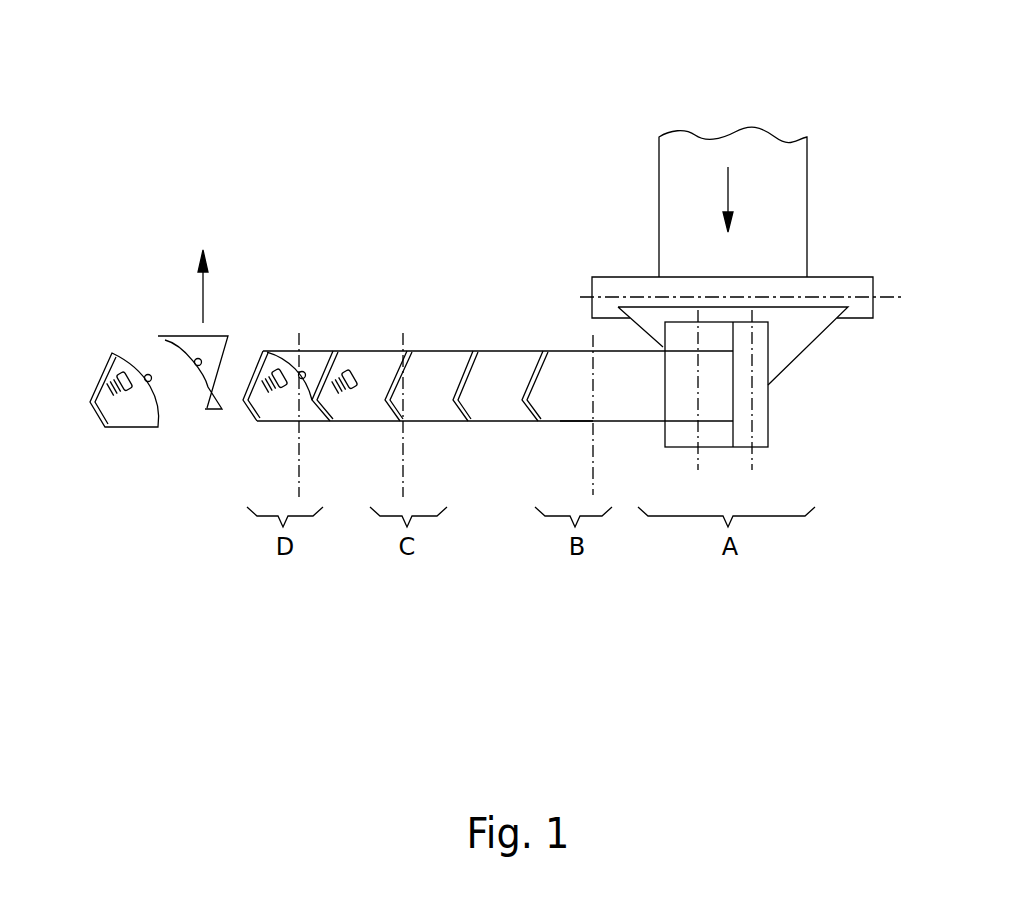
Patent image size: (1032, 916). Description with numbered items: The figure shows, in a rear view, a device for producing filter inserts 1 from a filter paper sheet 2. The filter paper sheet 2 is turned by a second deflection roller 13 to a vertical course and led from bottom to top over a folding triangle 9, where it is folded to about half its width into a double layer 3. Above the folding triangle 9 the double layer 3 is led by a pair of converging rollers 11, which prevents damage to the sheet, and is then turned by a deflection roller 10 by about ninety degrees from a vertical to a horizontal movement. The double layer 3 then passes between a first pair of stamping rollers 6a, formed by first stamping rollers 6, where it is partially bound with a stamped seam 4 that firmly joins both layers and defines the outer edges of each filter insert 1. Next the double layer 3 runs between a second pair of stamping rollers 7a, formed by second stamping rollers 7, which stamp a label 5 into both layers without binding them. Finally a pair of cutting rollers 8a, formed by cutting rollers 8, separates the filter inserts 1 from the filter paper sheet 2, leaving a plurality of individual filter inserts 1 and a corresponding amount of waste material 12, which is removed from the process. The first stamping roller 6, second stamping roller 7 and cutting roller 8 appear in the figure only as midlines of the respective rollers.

The filter insert 1 is at (95, 383).
The filter paper sheet 2 is at (698, 167).
The double layer 3 is at (612, 403).
The stamped seam 4 is at (325, 351).
The label 5 is at (265, 350).
The first stamping roller 6 is at (588, 351).
The first pair of stamping rollers 6a is at (588, 303).
The second stamping roller 7 is at (403, 351).
The second pair of stamping rollers 7a is at (412, 291).
The cutting roller 8 is at (303, 350).
The pair of cutting rollers 8a is at (301, 292).
The folding triangle 9 is at (792, 342).
The deflection roller 10 is at (687, 435).
The converging roller 11 is at (757, 435).
The waste material 12 is at (188, 346).
The second deflection roller 13 is at (860, 296).